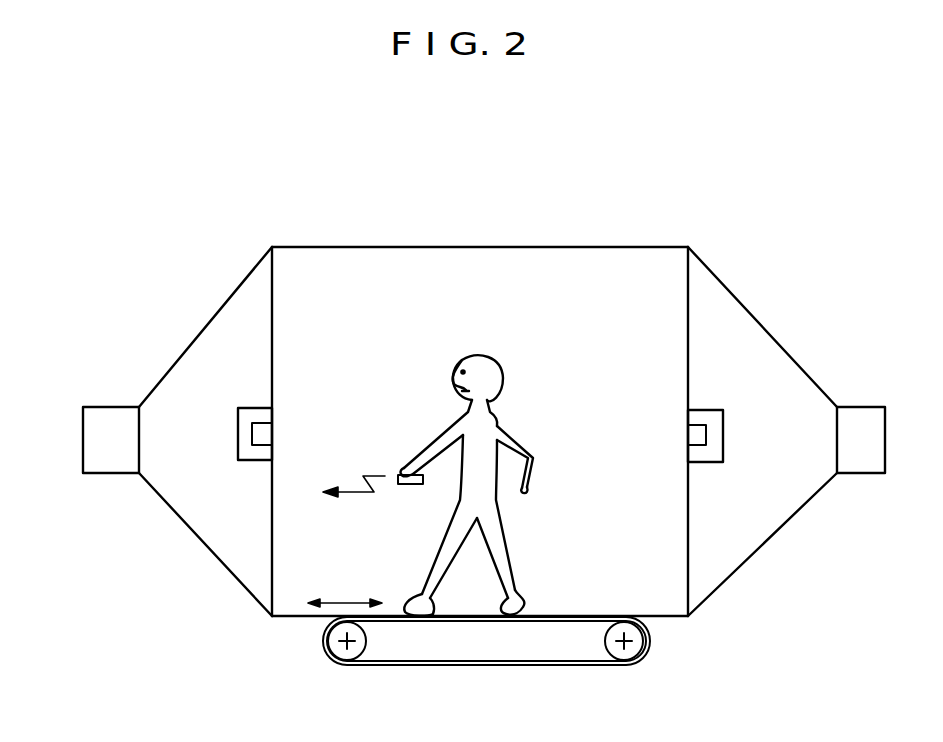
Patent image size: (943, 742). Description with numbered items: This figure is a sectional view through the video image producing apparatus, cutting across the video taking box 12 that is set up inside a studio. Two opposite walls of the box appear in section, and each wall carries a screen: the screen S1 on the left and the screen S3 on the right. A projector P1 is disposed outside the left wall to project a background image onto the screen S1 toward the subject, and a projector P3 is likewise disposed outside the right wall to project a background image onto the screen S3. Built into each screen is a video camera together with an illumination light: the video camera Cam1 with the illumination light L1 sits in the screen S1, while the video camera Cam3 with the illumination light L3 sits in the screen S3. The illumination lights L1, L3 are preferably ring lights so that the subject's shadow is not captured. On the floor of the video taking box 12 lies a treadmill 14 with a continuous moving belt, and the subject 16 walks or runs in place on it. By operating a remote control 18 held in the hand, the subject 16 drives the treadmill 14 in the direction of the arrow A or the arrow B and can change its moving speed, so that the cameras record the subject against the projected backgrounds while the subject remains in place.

The video taking box 12 is at (627, 225).
The treadmill 14 is at (515, 666).
The subject 16 is at (505, 424).
The remote control 18 is at (398, 472).
The screen S1 is at (273, 302).
The screen S3 is at (687, 320).
The projector P1 is at (106, 407).
The projector P3 is at (864, 407).
The illumination light L1 is at (262, 410).
The illumination light L3 is at (694, 415).
The video camera Cam1 is at (273, 431).
The video camera Cam3 is at (697, 437).
The arrow A is at (354, 603).
The arrow B is at (289, 603).